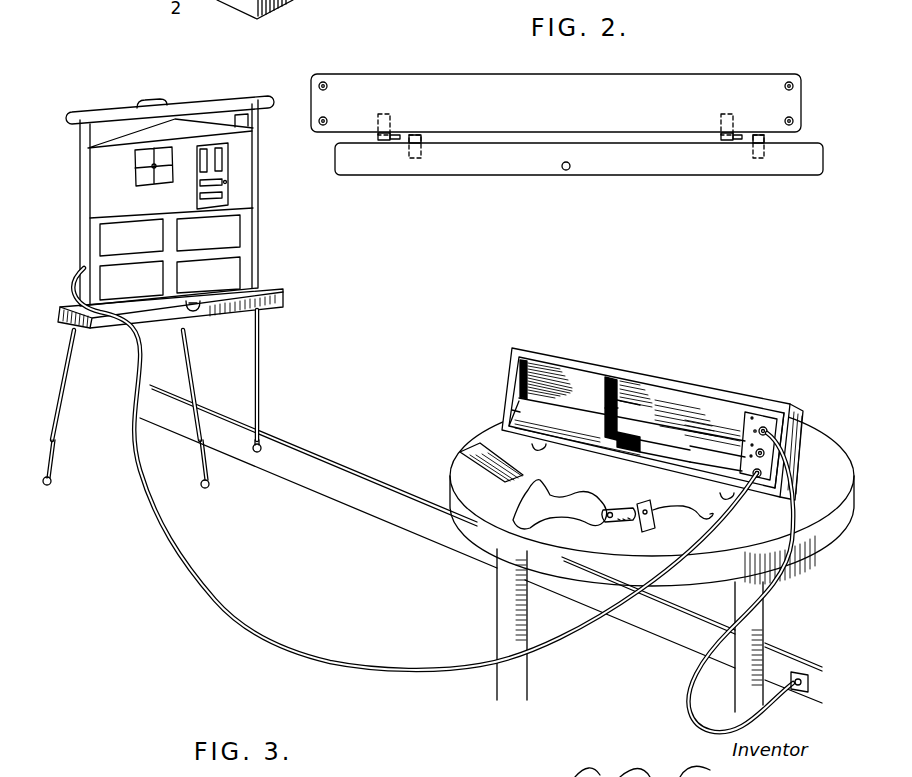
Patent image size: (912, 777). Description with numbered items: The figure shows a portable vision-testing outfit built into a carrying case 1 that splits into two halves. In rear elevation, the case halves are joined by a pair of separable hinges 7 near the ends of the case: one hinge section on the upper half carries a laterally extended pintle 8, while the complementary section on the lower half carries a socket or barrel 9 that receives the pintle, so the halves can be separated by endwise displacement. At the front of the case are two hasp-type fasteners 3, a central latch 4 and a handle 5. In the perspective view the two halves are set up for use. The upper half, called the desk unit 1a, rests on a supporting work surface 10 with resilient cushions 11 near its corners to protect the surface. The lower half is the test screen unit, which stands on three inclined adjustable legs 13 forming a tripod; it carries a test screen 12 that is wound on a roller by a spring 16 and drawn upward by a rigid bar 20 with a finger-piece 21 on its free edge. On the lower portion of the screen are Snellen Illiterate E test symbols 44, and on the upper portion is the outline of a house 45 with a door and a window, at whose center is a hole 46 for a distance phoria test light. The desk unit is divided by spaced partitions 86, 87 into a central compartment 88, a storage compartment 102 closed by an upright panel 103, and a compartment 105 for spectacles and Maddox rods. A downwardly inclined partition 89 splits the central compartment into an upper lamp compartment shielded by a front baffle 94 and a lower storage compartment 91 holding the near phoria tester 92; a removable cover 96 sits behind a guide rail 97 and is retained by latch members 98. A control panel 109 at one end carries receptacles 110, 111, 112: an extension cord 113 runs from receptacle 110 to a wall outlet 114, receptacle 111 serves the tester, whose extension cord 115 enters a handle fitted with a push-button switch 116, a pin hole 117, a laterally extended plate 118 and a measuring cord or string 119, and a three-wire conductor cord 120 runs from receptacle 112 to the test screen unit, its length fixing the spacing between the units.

In FIG. 2, the carrying case 1 is at (335, 150).
In FIG. 2, the desk unit 1a is at (668, 81).
In FIG. 3, the desk unit 1a is at (735, 400).
In FIG. 3, the hasp-type fasteners 3 is at (112, 318).
In FIG. 3, the latch 4 is at (646, 378).
In FIG. 3, the handle 5 is at (197, 312).
In FIG. 2, the separable hinges 7 is at (386, 140).
In FIG. 3, the separable hinges 7 is at (538, 449).
In FIG. 2, the pintle 8 is at (394, 136).
In FIG. 2, the socket or barrel 9 is at (418, 140).
In FIG. 3, the supporting work surface 10 is at (462, 478).
In FIG. 2, the resilient cushions 11 is at (318, 118).
In FIG. 3, the resilient cushions 11 is at (788, 498).
In FIG. 3, the test screen 12 is at (256, 233).
In FIG. 3, the adjustable legs 13 is at (73, 384).
In FIG. 3, the spring 16 is at (285, 297).
In FIG. 3, the rail or bar 20 is at (208, 106).
In FIG. 3, the handle or finger-piece 21 is at (143, 101).
In FIG. 3, the test symbols 44 is at (125, 272).
In FIG. 3, the outline of a house 45 is at (92, 182).
In FIG. 3, the hole 46 is at (150, 166).
In FIG. 3, the partition 86 is at (604, 406).
In FIG. 3, the partition 87 is at (712, 429).
In FIG. 3, the central compartment 88 is at (642, 440).
In FIG. 3, the downwardly inclined partition 89 is at (656, 412).
In FIG. 3, the lower storage compartment 91 is at (668, 475).
In FIG. 3, the near phoria tester 92 is at (622, 509).
In FIG. 3, the front baffle 94 is at (622, 380).
In FIG. 3, the removable cover 96 is at (470, 448).
In FIG. 3, the guide rail 97 is at (617, 452).
In FIG. 3, the latch members 98 is at (603, 422).
In FIG. 3, the storage compartment 102 is at (512, 378).
In FIG. 3, the upright panel 103 is at (520, 411).
In FIG. 3, the compartment 105 is at (727, 410).
In FIG. 3, the control panel 109 is at (770, 410).
In FIG. 3, the receptacle 110 is at (768, 430).
In FIG. 3, the receptacle 111 is at (766, 453).
In FIG. 3, the receptacle 112 is at (768, 474).
In FIG. 3, the extension cord 113 is at (690, 668).
In FIG. 3, the wall outlet 114 is at (796, 670).
In FIG. 3, the extension cord 115 is at (566, 496).
In FIG. 3, the push-button switch 116 is at (619, 524).
In FIG. 3, the pin hole 117 is at (675, 517).
In FIG. 3, the laterally extended plate 118 is at (645, 530).
In FIG. 3, the cord or string 119 is at (712, 522).
In FIG. 3, the conductor cord 120 is at (578, 636).